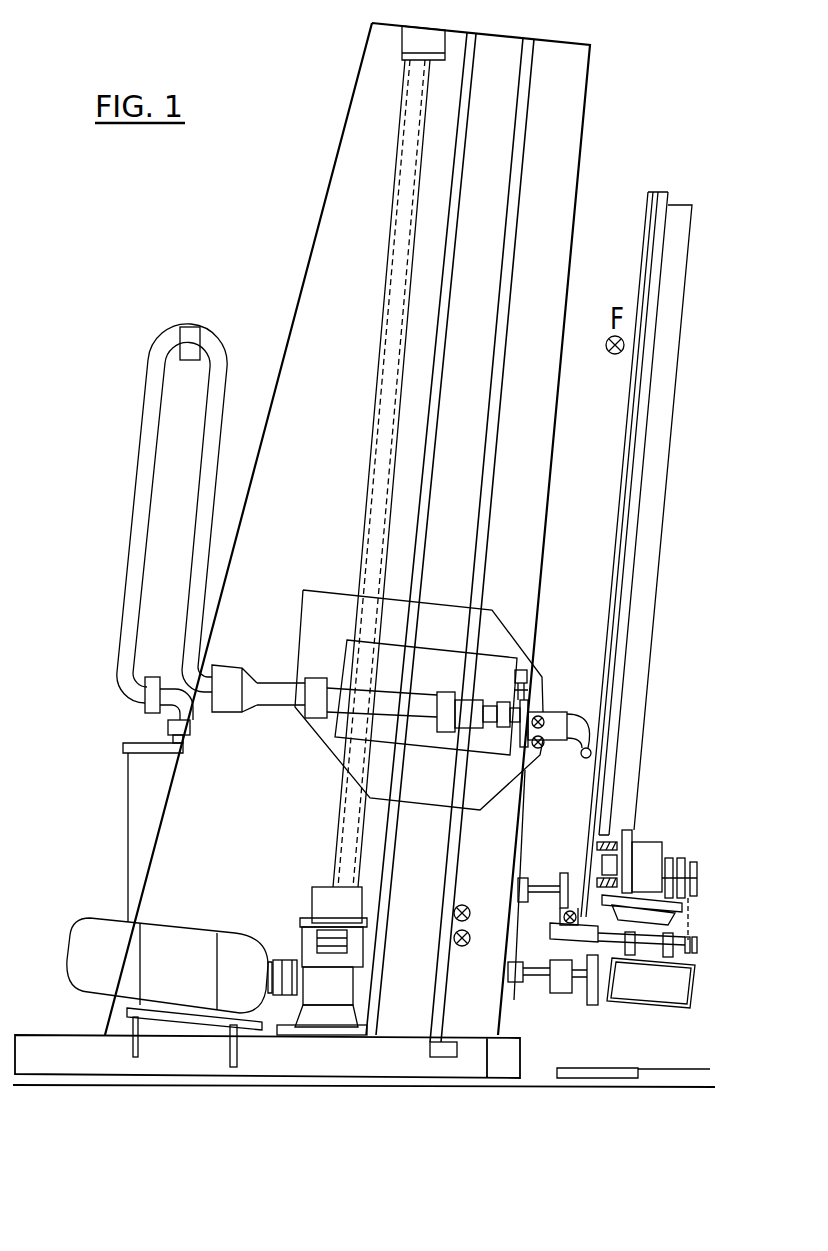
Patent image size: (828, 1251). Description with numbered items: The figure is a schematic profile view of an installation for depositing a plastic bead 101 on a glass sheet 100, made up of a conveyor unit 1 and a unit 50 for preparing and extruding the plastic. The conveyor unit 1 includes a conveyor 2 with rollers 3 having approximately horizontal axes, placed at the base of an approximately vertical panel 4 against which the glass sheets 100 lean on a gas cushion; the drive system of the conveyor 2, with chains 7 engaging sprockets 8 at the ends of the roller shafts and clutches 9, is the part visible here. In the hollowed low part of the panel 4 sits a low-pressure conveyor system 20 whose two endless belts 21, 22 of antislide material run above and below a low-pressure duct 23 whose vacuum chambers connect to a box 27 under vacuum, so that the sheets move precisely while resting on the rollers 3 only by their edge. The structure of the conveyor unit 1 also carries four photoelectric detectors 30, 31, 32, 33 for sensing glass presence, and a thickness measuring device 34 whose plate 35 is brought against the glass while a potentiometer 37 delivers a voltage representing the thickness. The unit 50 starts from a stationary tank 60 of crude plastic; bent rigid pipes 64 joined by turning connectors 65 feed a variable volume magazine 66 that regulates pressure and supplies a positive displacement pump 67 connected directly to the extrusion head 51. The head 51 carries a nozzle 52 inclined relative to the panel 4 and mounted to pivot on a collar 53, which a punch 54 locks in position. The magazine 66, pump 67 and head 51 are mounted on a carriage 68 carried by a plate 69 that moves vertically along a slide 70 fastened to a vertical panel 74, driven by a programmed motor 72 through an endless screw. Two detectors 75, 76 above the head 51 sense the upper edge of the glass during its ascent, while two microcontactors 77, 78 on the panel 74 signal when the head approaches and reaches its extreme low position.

The conveyor unit 1 is at (653, 763).
The conveyor 2 is at (707, 967).
The rollers 3 is at (683, 925).
The panel 4 is at (618, 687).
The chains 7 is at (693, 907).
The sprockets 8 is at (697, 945).
The clutches 9 is at (675, 862).
The low-pressure conveyor system 20 is at (620, 827).
The endless belt 21 is at (597, 848).
The endless belt 22 is at (598, 883).
The low-pressure duct 23 is at (623, 870).
The box under vacuum 27 is at (655, 868).
The detector 30 is at (565, 985).
The detector 31 is at (641, 939).
The detector 32 is at (630, 943).
The detector 33 is at (668, 945).
The thickness measuring device 34 is at (528, 1000).
The plate 35 is at (557, 907).
The potentiometer 37 is at (597, 990).
The plastic preparation and extrusion unit 50 is at (250, 290).
The extrusion head 51 is at (518, 765).
The nozzle 52 is at (602, 668).
The collar 53 is at (513, 735).
The punch 54 is at (527, 672).
The tank 60 is at (137, 838).
The bent rigid pipes 64 is at (140, 505).
The turning connectors 65 is at (188, 327).
The variable volume magazine 66 is at (368, 705).
The positive displacement pump 67 is at (470, 707).
The carriage 68 is at (347, 663).
The plate 69 is at (335, 595).
The slide 70 is at (450, 219).
The motor 72 is at (185, 993).
The vertical panel 74 is at (573, 90).
The detector 75 is at (540, 715).
The detector 76 is at (545, 717).
The microcontactor 77 is at (470, 922).
The microcontactor 78 is at (465, 950).
The glass sheet 100 is at (652, 192).
The plastic bead 101 is at (582, 758).